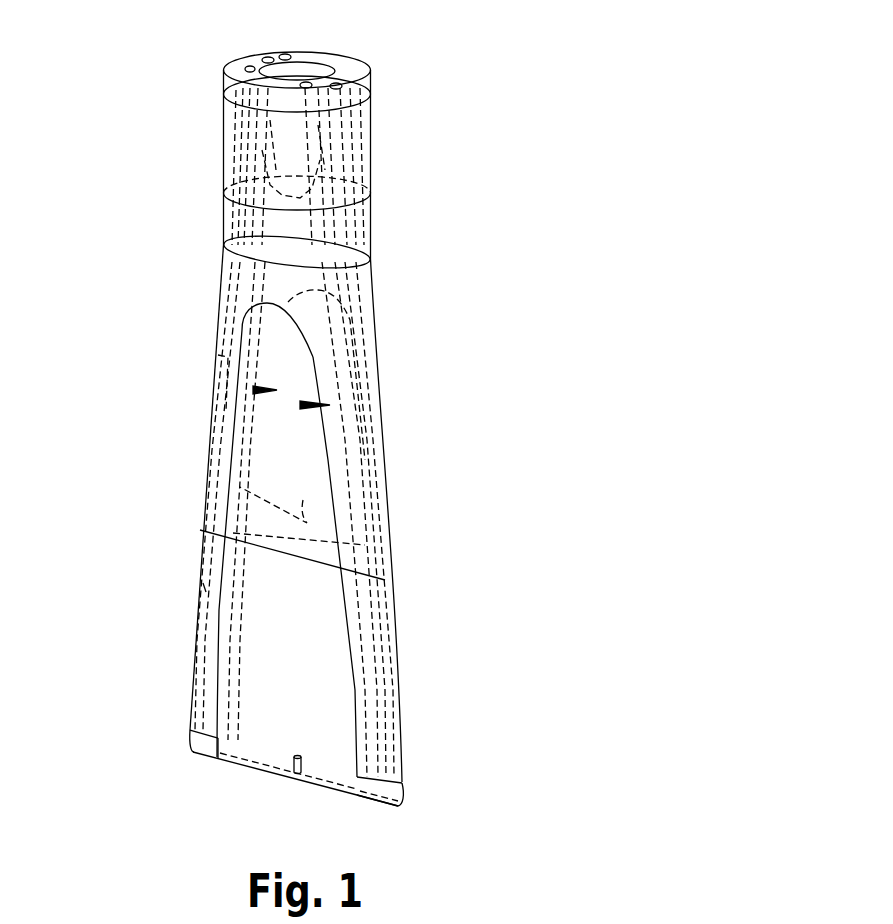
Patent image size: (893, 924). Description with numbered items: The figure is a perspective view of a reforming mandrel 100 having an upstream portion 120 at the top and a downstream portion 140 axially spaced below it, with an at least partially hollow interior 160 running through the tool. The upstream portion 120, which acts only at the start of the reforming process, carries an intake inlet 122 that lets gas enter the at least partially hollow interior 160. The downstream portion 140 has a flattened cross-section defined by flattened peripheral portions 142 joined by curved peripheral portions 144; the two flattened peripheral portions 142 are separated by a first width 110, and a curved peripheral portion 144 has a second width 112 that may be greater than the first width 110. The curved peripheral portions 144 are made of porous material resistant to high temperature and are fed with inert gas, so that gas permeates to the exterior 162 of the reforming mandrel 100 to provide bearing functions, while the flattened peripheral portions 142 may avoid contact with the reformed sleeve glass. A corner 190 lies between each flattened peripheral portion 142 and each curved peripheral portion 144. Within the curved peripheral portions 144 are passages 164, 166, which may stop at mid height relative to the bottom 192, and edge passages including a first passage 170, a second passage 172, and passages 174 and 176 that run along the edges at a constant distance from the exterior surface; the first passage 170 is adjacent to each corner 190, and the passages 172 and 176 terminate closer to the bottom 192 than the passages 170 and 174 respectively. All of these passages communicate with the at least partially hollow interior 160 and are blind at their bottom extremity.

The reforming mandrel 100 is at (383, 383).
The first width 110 is at (225, 357).
The second width 112 is at (363, 538).
The upstream portion 120 is at (388, 157).
The intake inlet 122 is at (316, 63).
The downstream portion 140 is at (320, 478).
The flattened peripheral portions 142 is at (262, 675).
The curved peripheral portions 144 is at (207, 472).
The at least partially hollow interior 160 is at (295, 331).
The exterior 162 is at (297, 356).
The passage 164 is at (370, 438).
The passage 166 is at (253, 389).
The first passage 170 is at (393, 696).
The second passage 172 is at (398, 758).
The passage 174 is at (203, 583).
The passage 176 is at (207, 727).
The corner 190 is at (200, 532).
The bottom 192 is at (267, 772).